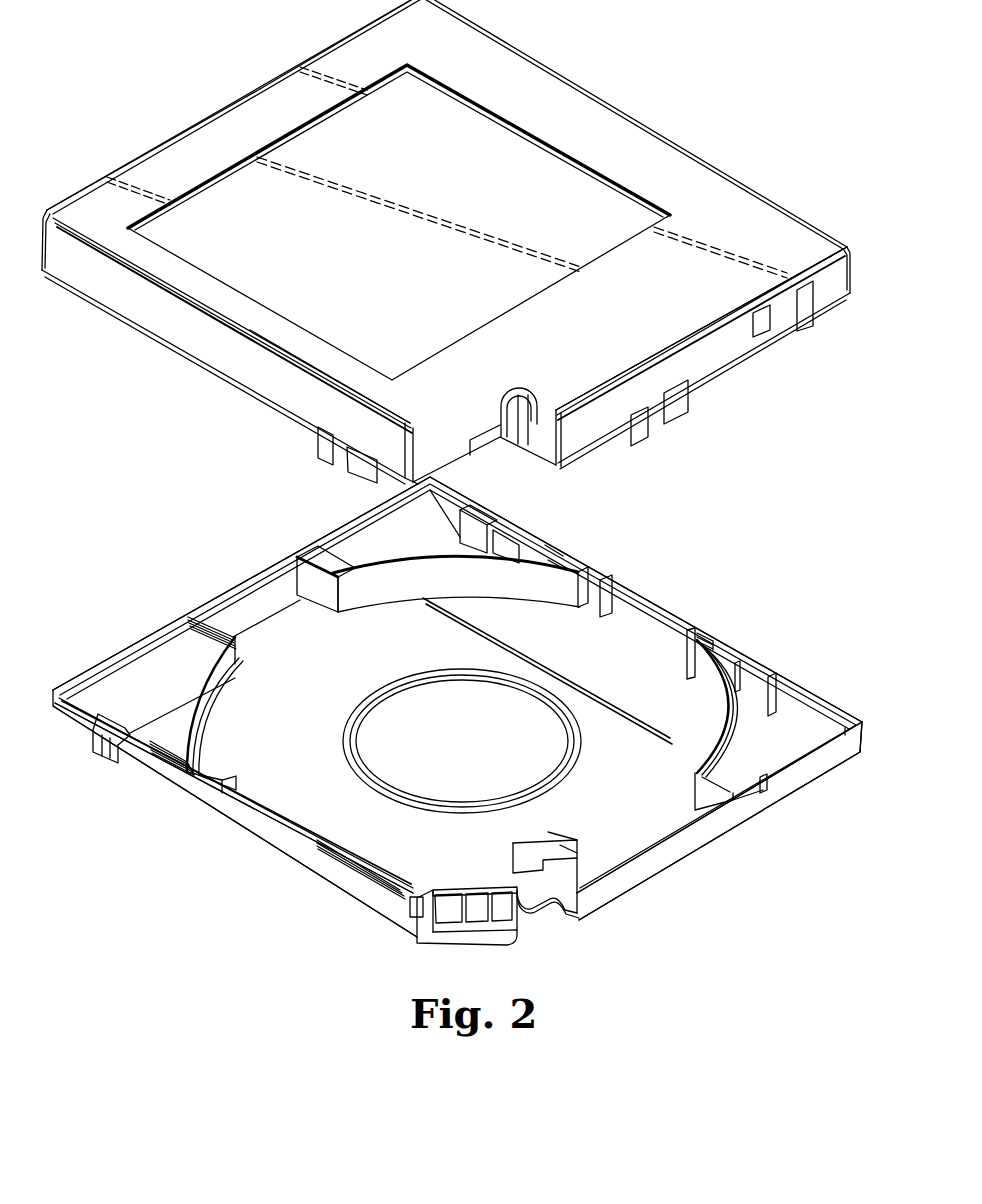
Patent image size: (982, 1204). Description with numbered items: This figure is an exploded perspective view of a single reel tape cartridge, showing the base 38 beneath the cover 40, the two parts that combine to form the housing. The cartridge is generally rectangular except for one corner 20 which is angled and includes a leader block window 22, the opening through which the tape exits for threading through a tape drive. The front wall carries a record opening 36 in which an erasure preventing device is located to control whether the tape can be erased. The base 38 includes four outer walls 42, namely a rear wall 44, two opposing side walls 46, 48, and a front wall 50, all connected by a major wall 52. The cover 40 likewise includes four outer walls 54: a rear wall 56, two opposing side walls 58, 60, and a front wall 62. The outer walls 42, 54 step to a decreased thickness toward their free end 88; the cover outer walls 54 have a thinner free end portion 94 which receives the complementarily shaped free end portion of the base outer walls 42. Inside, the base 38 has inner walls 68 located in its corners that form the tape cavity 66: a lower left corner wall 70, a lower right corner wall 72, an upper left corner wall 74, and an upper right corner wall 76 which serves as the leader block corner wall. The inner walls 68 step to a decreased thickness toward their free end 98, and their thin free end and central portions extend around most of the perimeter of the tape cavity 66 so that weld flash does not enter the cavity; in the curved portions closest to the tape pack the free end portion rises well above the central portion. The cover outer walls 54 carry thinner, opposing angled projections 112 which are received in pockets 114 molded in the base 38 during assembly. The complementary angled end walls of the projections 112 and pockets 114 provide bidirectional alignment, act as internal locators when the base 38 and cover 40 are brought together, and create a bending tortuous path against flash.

The angled corner 20 is at (468, 935).
The leader block window 22 is at (478, 440).
The record opening 36 is at (757, 330).
The base 38 is at (648, 587).
The cover 40 is at (218, 103).
The base outer walls 42 is at (360, 893).
The base rear wall 44 is at (240, 586).
The base side wall 46 is at (240, 832).
The base side wall 48 is at (762, 660).
The base front wall 50 is at (750, 813).
The base major wall 52 is at (338, 804).
The cover outer walls 54 is at (346, 50).
The cover rear wall 56 is at (143, 152).
The cover side wall 58 is at (350, 421).
The cover side wall 60 is at (700, 152).
The cover front wall 62 is at (722, 353).
The tape cavity 66 is at (280, 600).
The base inner walls 68 is at (224, 676).
The lower left corner wall 70 is at (512, 580).
The lower right corner wall 72 is at (215, 680).
The upper left corner wall 74 is at (712, 688).
The upper right corner wall 76 is at (545, 852).
The free end of the outer walls 88 is at (840, 718).
The thinner free end portion of cover outer walls 94 is at (110, 313).
The free end of the inner walls 98 is at (212, 758).
The projection 112 is at (355, 472).
The pocket 114 is at (566, 563).